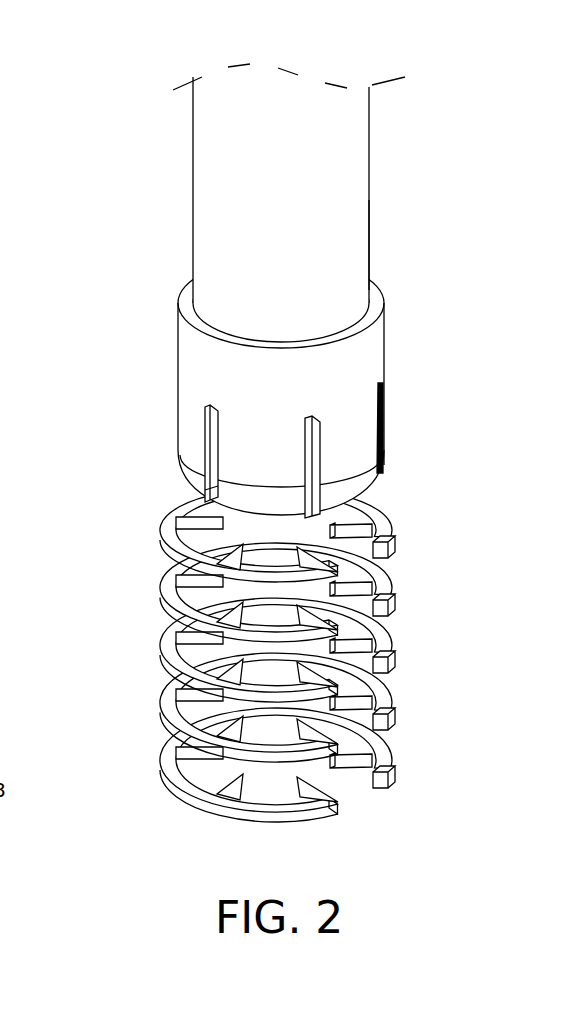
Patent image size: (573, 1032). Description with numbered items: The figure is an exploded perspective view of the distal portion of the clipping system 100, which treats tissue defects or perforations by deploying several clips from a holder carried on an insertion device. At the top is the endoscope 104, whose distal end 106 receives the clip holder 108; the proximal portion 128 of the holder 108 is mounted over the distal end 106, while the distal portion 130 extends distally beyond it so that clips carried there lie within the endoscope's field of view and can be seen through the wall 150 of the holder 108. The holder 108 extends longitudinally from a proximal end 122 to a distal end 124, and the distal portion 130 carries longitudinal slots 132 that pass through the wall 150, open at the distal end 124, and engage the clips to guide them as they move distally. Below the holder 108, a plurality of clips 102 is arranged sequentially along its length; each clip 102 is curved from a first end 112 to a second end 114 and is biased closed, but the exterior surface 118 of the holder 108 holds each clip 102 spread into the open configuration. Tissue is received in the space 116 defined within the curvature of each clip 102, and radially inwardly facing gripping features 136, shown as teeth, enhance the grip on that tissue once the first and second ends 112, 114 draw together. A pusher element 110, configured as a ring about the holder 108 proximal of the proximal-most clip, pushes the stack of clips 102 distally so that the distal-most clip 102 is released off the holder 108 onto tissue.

The clipping system 100 is at (271, 453).
The clips 102 is at (279, 718).
The endoscope 104 is at (197, 243).
The distal end of endoscope 106 is at (363, 290).
The clip holder 108 is at (275, 398).
The pusher element 110 is at (380, 512).
The first end of clip 112 is at (330, 812).
The second end of clip 114 is at (393, 772).
The space 116 is at (267, 778).
The exterior surface of holder 118 is at (180, 400).
The proximal end of holder 122 is at (177, 304).
The distal end of holder 124 is at (368, 480).
The proximal portion of holder 128 is at (180, 355).
The distal portion of holder 130 is at (373, 423).
The longitudinal slots 132 is at (307, 449).
The gripping features 136 is at (243, 775).
The wall of holder 150 is at (212, 470).